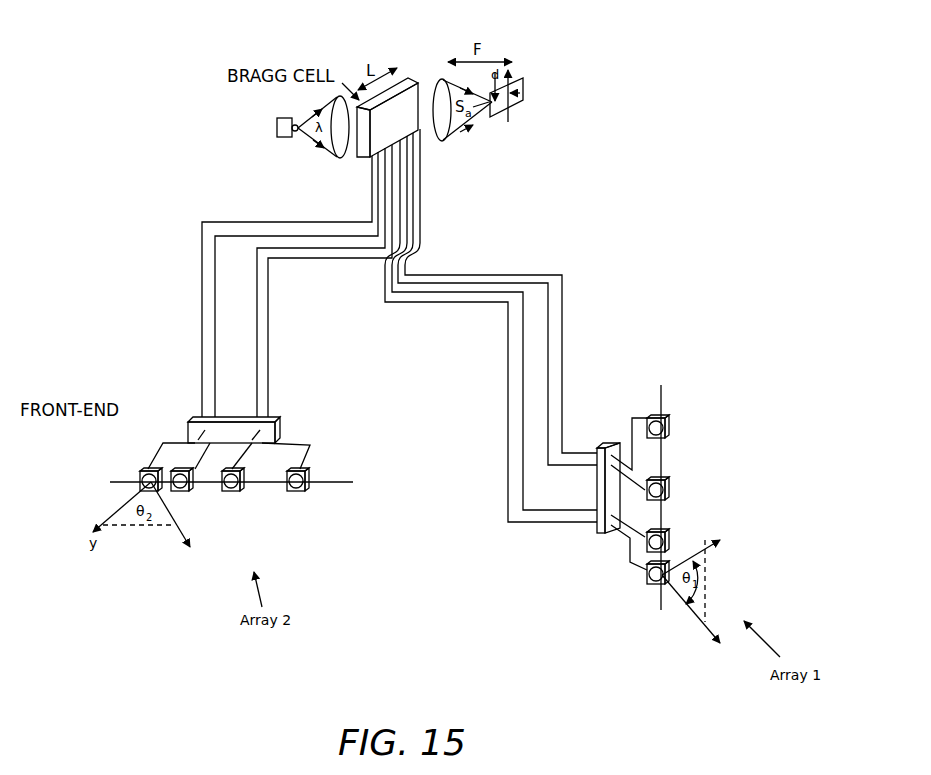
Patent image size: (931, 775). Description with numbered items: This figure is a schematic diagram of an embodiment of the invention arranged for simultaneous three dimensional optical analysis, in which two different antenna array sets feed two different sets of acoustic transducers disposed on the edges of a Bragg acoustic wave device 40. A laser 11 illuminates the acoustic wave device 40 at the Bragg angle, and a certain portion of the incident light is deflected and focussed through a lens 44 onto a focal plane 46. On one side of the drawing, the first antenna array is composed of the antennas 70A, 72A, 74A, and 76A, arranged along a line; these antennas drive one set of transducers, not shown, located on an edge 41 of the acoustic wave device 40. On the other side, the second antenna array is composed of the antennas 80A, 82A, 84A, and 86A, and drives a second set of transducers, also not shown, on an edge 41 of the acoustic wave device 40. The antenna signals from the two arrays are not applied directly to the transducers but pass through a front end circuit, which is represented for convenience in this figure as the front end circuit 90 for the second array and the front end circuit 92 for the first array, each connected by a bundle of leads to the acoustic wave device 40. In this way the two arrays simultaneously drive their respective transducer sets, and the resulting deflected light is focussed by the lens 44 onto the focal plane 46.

The laser 11 is at (277, 127).
The acoustic wave device 40 is at (402, 47).
The edge 41 is at (360, 158).
The lens 44 is at (438, 85).
The focal plane 46 is at (523, 88).
The front end circuit 90 is at (188, 419).
The front end circuit 92 is at (600, 446).
The antenna 70A is at (670, 432).
The antenna 72A is at (670, 495).
The antenna 74A is at (670, 546).
The antenna 76A is at (647, 573).
The antenna 80A is at (142, 470).
The antenna 82A is at (178, 492).
The antenna 84A is at (235, 492).
The antenna 86A is at (303, 492).